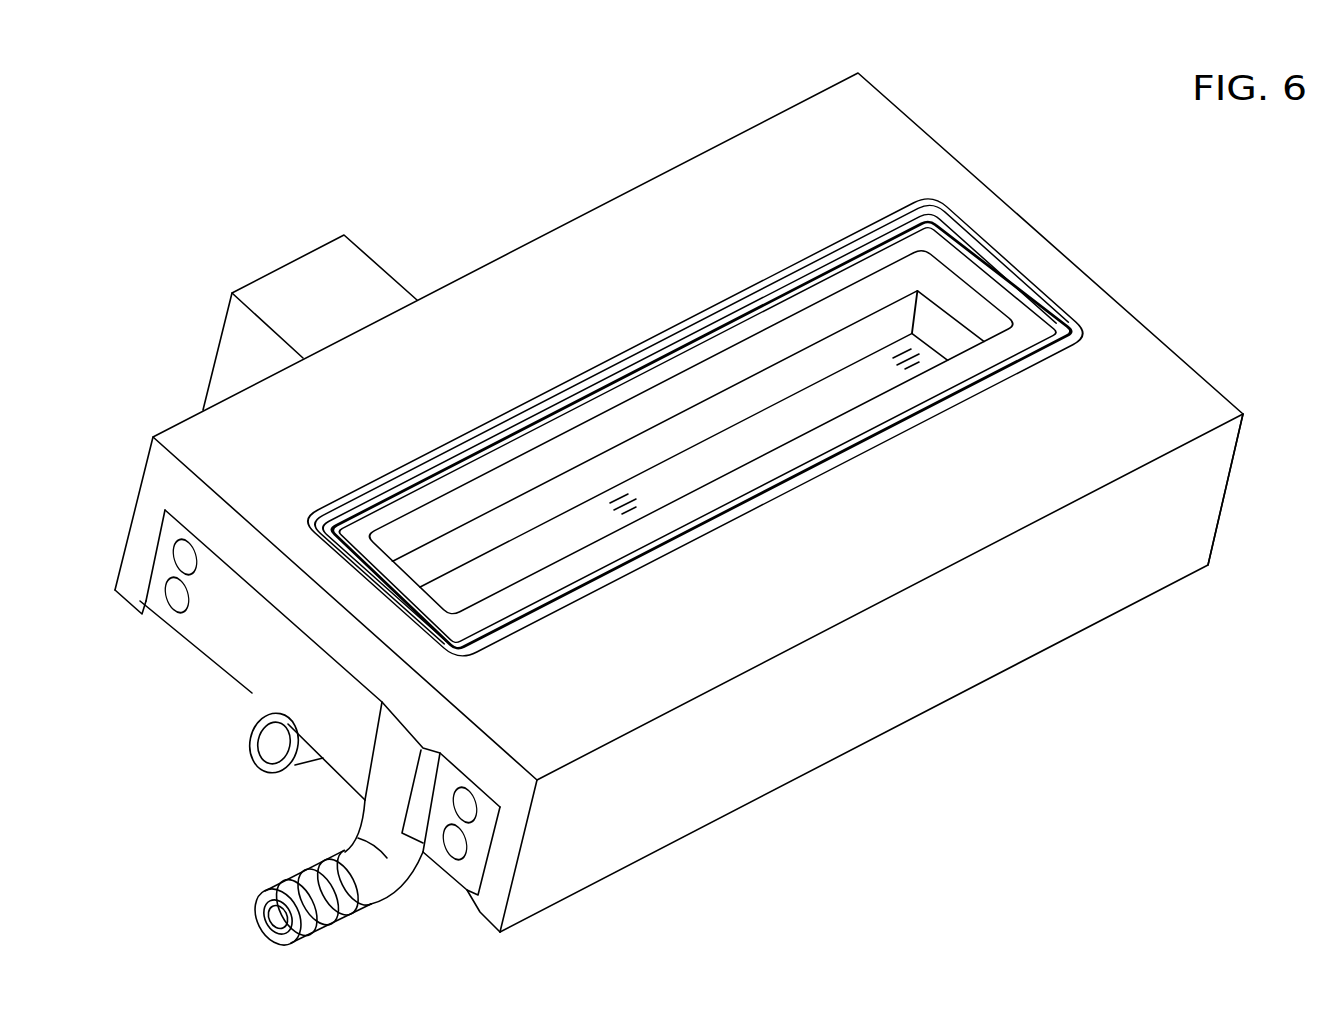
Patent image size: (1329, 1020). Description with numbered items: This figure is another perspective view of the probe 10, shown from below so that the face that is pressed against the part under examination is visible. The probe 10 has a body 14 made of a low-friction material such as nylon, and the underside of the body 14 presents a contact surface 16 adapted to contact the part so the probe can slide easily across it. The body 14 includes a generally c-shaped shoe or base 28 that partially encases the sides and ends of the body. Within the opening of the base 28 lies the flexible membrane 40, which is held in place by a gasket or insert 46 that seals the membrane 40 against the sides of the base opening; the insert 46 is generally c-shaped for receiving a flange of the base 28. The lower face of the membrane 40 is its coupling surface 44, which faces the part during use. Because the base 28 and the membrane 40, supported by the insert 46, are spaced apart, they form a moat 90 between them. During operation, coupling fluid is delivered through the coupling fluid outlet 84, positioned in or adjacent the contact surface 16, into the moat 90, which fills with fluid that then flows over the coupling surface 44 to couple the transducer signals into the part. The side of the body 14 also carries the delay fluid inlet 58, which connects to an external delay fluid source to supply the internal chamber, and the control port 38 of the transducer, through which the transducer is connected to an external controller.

The probe 10 is at (1015, 111).
The body 14 is at (195, 701).
The contact surface 16 is at (902, 548).
The base 28 is at (1228, 490).
The control port 38 is at (290, 777).
The flexible membrane 40 is at (805, 280).
The coupling surface 44 is at (815, 427).
The insert 46 is at (745, 343).
The delay fluid inlet 58 is at (304, 872).
The coupling fluid outlet 84 is at (437, 457).
The moat 90 is at (1056, 308).